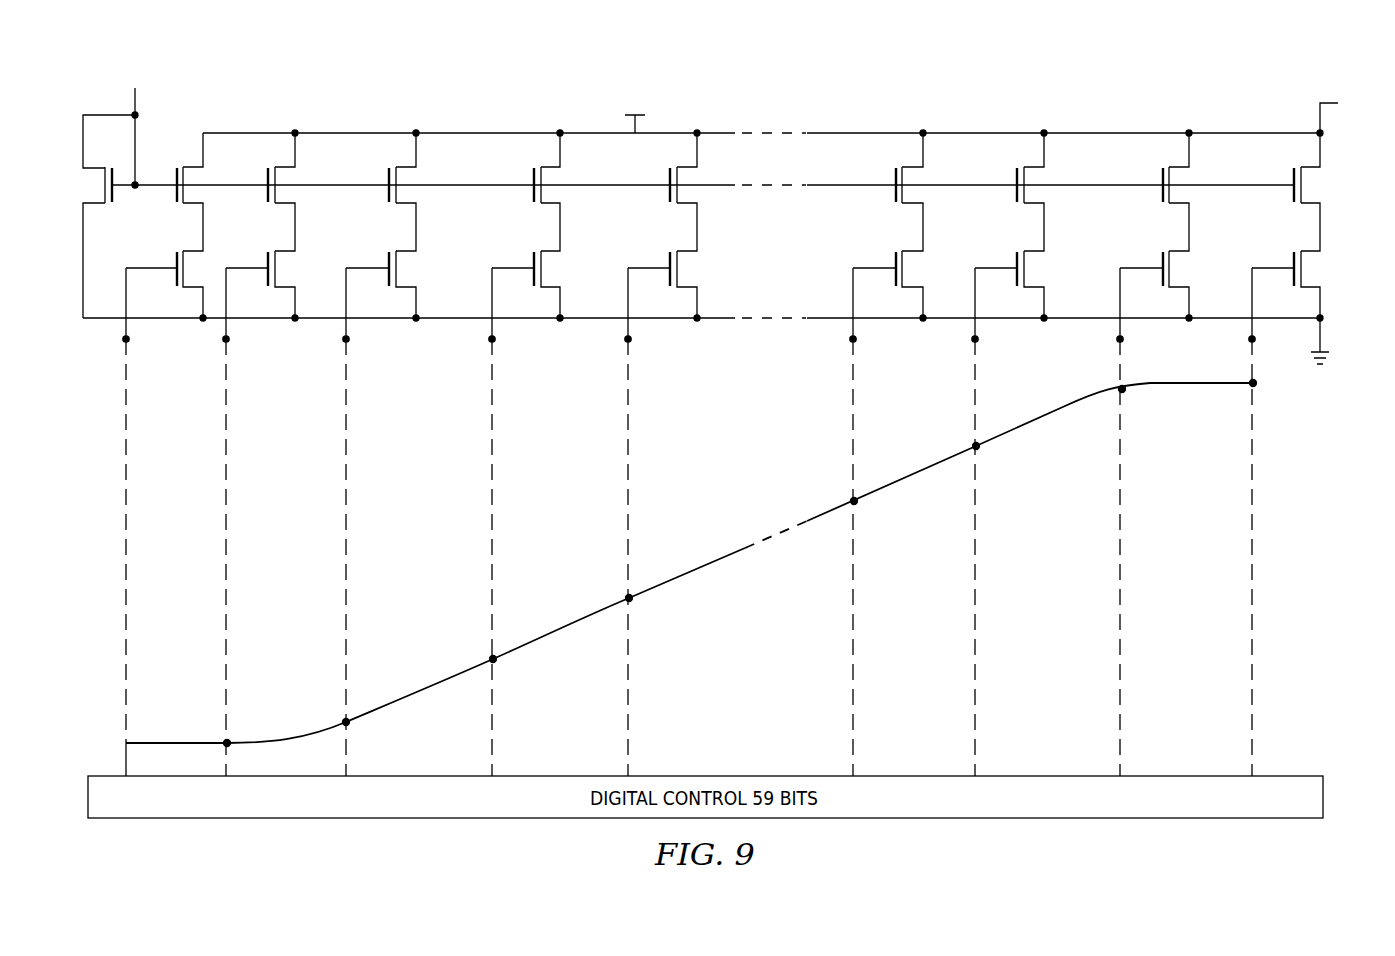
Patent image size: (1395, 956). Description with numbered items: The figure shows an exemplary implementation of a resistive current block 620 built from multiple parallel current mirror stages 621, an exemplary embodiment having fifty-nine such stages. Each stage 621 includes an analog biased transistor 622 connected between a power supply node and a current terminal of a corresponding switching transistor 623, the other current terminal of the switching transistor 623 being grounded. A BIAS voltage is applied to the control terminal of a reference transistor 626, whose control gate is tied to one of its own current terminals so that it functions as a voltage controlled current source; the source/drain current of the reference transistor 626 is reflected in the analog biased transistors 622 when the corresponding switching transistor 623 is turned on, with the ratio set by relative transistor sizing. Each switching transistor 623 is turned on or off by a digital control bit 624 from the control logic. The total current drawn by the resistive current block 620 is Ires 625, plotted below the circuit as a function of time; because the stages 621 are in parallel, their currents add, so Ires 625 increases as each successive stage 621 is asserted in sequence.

The resistive current block 620 is at (729, 191).
The current mirror stage 621 is at (293, 131).
The analog biased transistor 622 is at (1323, 180).
The switching transistor 623 is at (1324, 267).
The control bit 624 is at (128, 336).
The Ires 625 is at (568, 622).
The reference transistor 626 is at (113, 192).